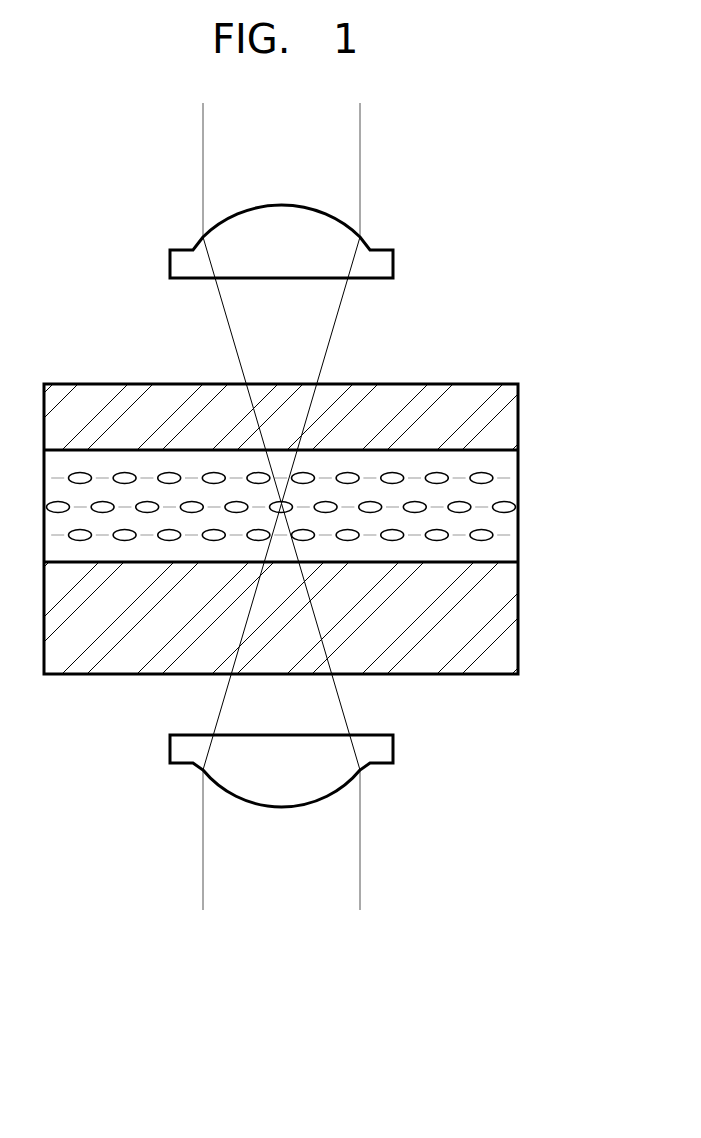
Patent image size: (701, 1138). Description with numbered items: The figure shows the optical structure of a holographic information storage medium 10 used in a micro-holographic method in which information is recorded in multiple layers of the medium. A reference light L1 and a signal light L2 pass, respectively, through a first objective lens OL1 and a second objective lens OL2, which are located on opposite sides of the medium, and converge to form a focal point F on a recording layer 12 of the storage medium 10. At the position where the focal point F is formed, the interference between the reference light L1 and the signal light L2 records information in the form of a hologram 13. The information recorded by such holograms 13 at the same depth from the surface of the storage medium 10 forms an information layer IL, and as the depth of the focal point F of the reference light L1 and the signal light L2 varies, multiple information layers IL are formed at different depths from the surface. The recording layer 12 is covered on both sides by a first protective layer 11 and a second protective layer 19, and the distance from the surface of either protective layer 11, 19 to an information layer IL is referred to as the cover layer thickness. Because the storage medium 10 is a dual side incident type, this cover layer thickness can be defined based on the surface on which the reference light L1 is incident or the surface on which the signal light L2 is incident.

The holographic information storage medium 10 is at (556, 354).
The first protective layer 11 is at (513, 418).
The recording layer 12 is at (513, 543).
The hologram 13 is at (437, 472).
The second protective layer 19 is at (513, 622).
The information layer IL is at (480, 507).
The focal point F is at (280, 505).
The reference light L1 is at (221, 303).
The signal light L2 is at (222, 704).
The first objective lens OL1 is at (392, 264).
The second objective lens OL2 is at (392, 749).